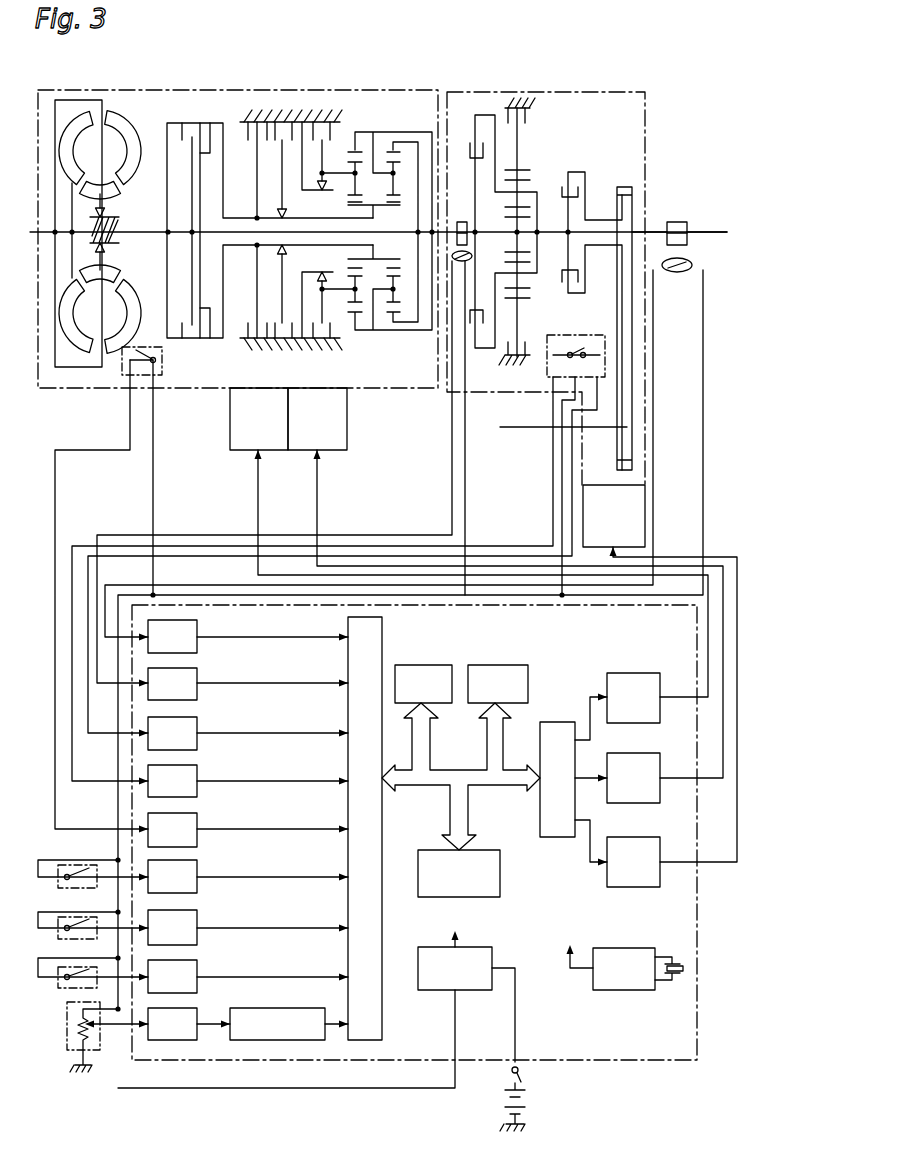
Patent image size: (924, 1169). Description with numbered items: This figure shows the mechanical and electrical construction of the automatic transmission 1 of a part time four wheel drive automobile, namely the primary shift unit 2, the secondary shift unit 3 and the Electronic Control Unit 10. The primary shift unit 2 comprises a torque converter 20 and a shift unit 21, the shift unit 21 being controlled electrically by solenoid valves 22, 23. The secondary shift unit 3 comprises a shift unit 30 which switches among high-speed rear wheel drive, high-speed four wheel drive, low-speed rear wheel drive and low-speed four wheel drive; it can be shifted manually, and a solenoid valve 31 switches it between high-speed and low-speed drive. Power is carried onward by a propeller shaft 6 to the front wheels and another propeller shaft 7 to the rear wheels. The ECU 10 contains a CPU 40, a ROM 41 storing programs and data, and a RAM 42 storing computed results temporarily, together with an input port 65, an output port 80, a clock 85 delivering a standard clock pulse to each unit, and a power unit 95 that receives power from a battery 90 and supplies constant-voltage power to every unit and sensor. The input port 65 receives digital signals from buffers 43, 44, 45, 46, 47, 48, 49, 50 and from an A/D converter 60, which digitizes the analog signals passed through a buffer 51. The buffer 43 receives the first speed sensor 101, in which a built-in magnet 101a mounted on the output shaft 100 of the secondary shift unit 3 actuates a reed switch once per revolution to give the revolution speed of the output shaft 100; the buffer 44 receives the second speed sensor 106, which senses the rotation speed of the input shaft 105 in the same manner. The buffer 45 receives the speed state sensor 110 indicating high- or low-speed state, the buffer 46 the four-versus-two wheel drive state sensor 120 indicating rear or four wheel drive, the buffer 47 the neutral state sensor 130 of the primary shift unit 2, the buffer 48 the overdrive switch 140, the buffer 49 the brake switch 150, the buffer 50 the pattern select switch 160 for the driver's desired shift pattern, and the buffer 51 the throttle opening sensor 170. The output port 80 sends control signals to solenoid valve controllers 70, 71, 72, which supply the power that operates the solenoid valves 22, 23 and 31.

The automatic transmission 1 is at (462, 73).
The primary shift unit 2 is at (238, 222).
The secondary shift unit 3 is at (508, 92).
The propeller shaft 6 is at (522, 430).
The propeller shaft 7 is at (722, 232).
The Electronic Control Unit (ECU) 10 is at (625, 1062).
The torque converter 20 is at (130, 138).
The shift unit 21 is at (340, 95).
The solenoid valve 22 is at (230, 421).
The solenoid valve 23 is at (347, 421).
The shift unit 30 is at (527, 177).
The solenoid valve 31 is at (645, 509).
The Central Processing Unit (CPU) 40 is at (503, 877).
The Read Only Memory (ROM) 41 is at (441, 665).
The Random Access Memory (RAM) 42 is at (513, 665).
The buffer 43 is at (197, 622).
The buffer 44 is at (197, 670).
The buffer 45 is at (197, 719).
The buffer 46 is at (197, 767).
The buffer 47 is at (197, 815).
The buffer 48 is at (197, 862).
The buffer 49 is at (197, 912).
The buffer 50 is at (197, 962).
The buffer 51 is at (197, 1010).
The A/D converter 60 is at (295, 1008).
The input port 65 is at (382, 640).
The solenoid valve controller 70 is at (635, 673).
The solenoid valve controller 71 is at (658, 757).
The solenoid valve controller 72 is at (645, 837).
The output port 80 is at (562, 722).
The clock 85 is at (645, 948).
The battery 90 is at (530, 1106).
The power unit 95 is at (492, 952).
The output shaft 100 is at (640, 232).
The first speed sensor 101 is at (693, 267).
The built-in magnet 101a is at (688, 222).
The input shaft 105 is at (457, 222).
The second speed sensor 106 is at (472, 256).
The speed state sensor 110 is at (597, 347).
The 4-2 drive state sensor 120 is at (553, 347).
The neutral state sensor 130 is at (163, 369).
The overdrive switch 140 is at (58, 898).
The brake switch 150 is at (58, 948).
The pattern select switch 160 is at (58, 997).
The throttle opening sensor 170 is at (58, 1046).